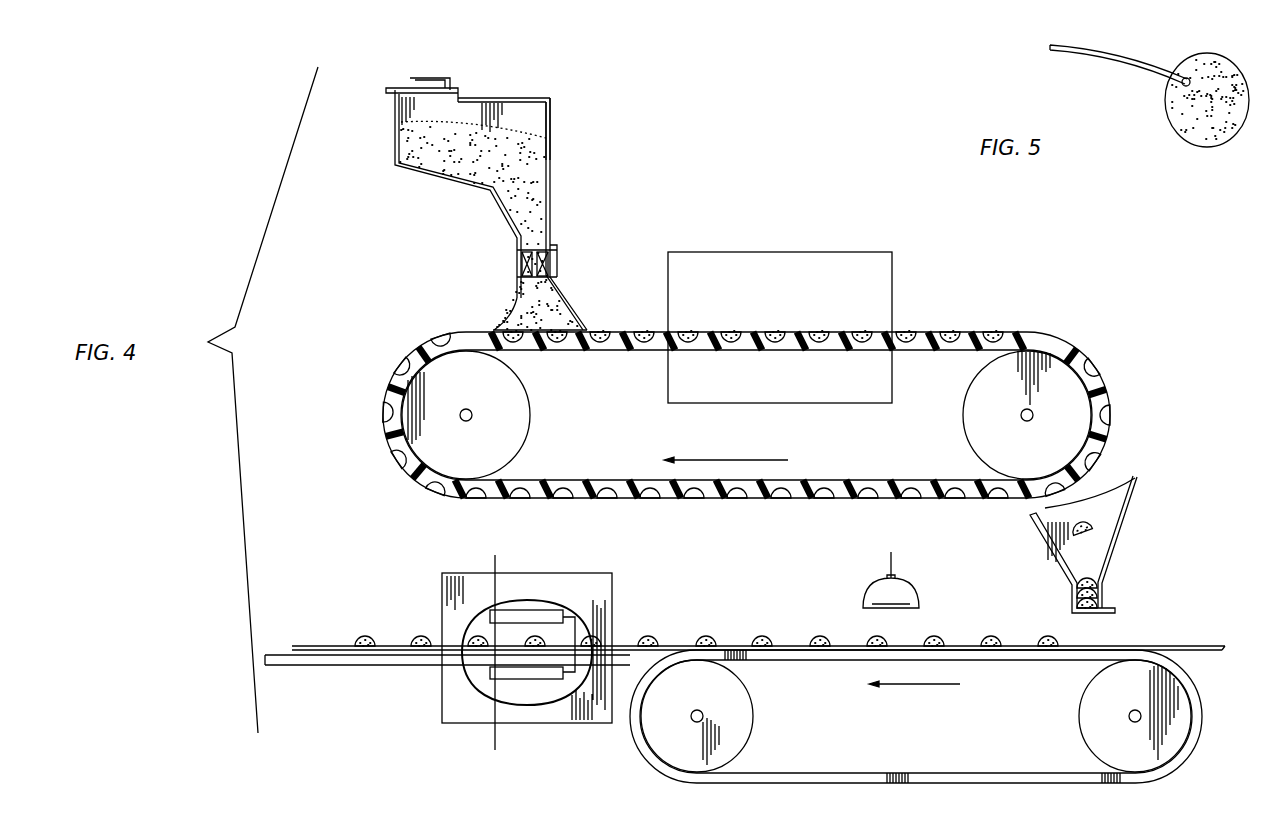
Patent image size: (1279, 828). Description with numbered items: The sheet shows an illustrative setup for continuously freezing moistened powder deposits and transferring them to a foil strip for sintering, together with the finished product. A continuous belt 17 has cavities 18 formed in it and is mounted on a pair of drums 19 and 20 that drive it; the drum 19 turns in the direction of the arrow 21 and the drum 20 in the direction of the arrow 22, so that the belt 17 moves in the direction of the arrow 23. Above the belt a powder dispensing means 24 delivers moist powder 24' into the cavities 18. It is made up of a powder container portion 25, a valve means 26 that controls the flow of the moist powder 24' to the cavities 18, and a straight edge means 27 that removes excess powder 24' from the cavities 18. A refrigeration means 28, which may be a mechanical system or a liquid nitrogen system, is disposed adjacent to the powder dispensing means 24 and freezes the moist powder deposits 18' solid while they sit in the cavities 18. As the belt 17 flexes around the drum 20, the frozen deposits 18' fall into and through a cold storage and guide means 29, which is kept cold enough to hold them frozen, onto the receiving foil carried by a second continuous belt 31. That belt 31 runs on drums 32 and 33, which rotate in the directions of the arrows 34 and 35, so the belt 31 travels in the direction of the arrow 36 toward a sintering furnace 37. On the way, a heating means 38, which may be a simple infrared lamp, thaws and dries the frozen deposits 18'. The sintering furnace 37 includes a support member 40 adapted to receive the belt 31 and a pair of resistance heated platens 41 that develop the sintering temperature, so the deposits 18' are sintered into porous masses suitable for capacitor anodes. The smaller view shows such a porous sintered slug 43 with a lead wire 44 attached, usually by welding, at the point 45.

In FIG. 4, the continuous belt 17 is at (1093, 367).
In FIG. 4, the cavities 18 is at (695, 438).
In FIG. 4, the moist powder deposits 18' is at (732, 466).
In FIG. 4, the drum 19 is at (513, 387).
In FIG. 4, the drum 20 is at (1070, 411).
In FIG. 4, the arrow 21 is at (468, 375).
In FIG. 4, the arrow 22 is at (1020, 371).
In FIG. 4, the arrow 23 is at (766, 460).
In FIG. 4, the powder dispensing means 24 is at (505, 204).
In FIG. 4, the moist powder 24' is at (443, 199).
In FIG. 4, the powder container portion 25 is at (553, 117).
In FIG. 4, the valve means 26 is at (522, 262).
In FIG. 4, the straight edge means 27 is at (575, 305).
In FIG. 4, the refrigeration means 28 is at (778, 252).
In FIG. 4, the cold storage and guide means 29 is at (1118, 557).
In FIG. 4, the continuous belt 31 is at (950, 785).
In FIG. 4, the drum 32 is at (1150, 752).
In FIG. 4, the drum 33 is at (748, 713).
In FIG. 4, the arrow 34 is at (1094, 711).
In FIG. 4, the arrow 35 is at (661, 705).
In FIG. 4, the arrow 36 is at (940, 686).
In FIG. 4, the sintering furnace 37 is at (433, 591).
In FIG. 4, the heating means 38 is at (905, 598).
In FIG. 4, the support member 40 is at (472, 655).
In FIG. 4, the resistance heated platens 41 is at (539, 687).
In FIG. 5, the porous sintered slug 43 is at (1213, 73).
In FIG. 5, the lead wire 44 is at (1103, 52).
In FIG. 5, the point 45 is at (1187, 77).